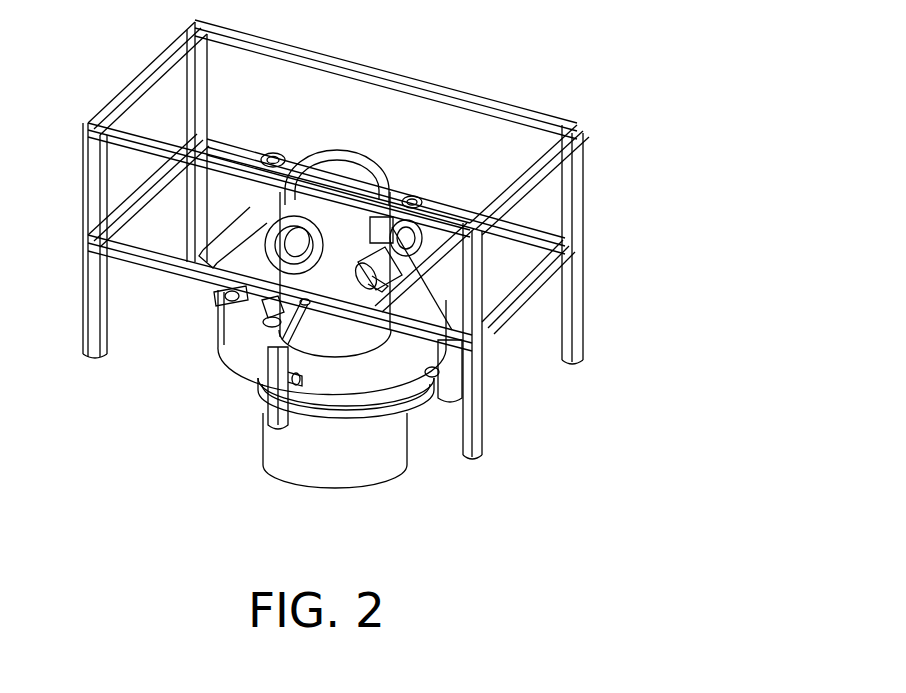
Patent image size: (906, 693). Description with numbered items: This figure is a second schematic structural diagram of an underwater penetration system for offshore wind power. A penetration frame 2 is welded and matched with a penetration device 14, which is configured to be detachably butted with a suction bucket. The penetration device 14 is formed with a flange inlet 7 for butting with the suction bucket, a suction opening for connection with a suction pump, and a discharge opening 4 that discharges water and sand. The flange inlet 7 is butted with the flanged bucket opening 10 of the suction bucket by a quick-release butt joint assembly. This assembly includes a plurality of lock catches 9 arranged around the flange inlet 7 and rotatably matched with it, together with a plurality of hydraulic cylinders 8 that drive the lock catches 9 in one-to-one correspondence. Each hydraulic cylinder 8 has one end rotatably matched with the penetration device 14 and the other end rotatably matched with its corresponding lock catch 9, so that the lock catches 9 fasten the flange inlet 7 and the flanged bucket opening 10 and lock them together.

The penetration frame 2 is at (390, 80).
The penetration device 14 is at (377, 157).
The discharge opening 4 is at (283, 250).
The hydraulic cylinder 8 is at (290, 327).
The flange inlet 7 is at (377, 363).
The lock catch 9 is at (277, 405).
The flanged bucket opening 10 is at (367, 403).